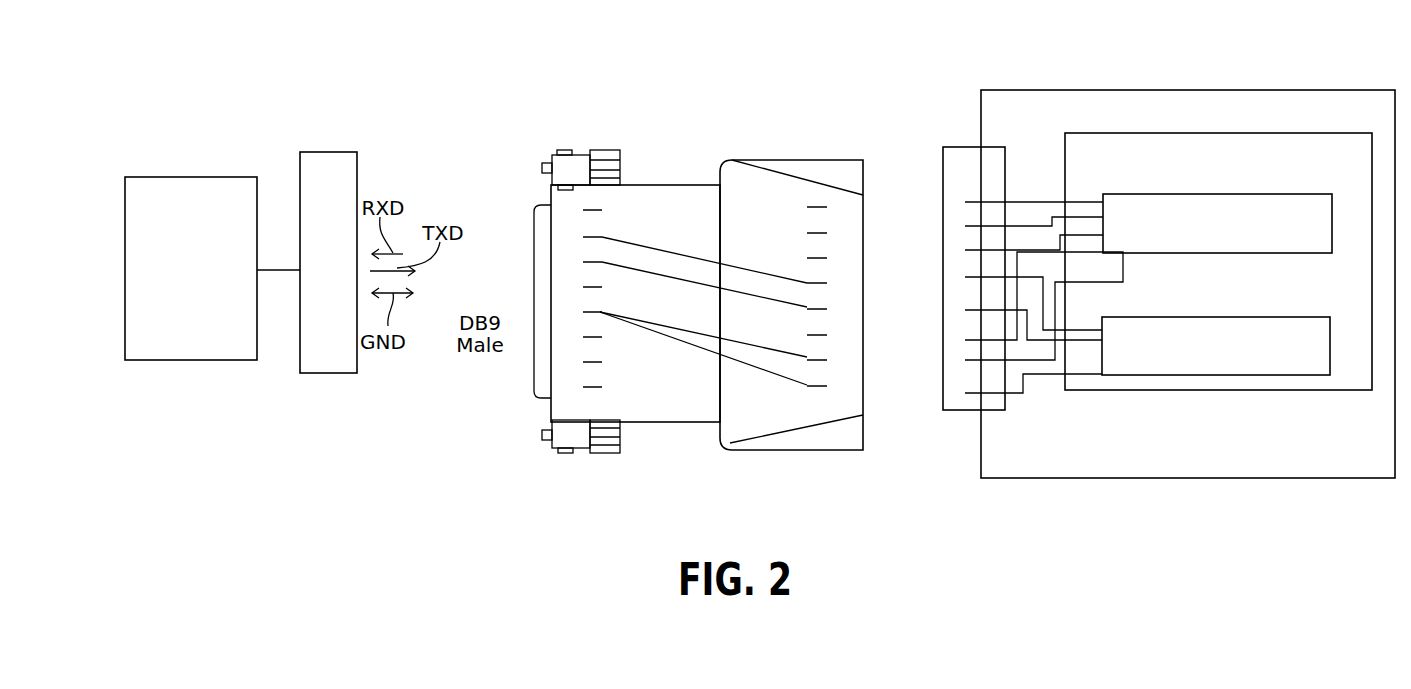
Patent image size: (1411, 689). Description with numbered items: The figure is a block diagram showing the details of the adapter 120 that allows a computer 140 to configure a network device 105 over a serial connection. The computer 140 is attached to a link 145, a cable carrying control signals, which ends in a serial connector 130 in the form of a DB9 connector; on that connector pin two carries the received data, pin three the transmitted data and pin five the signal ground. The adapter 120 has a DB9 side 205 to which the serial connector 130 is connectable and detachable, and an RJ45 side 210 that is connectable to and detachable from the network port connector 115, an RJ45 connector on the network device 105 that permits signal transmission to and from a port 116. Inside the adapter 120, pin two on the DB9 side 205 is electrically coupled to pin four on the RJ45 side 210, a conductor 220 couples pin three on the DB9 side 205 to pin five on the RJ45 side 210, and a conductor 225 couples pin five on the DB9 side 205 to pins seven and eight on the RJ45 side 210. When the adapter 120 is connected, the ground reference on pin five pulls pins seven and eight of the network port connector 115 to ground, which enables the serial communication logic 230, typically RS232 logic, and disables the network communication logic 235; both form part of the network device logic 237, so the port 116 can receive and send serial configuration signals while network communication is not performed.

The network device 105 is at (1267, 90).
The network port connector 115 is at (962, 412).
The port 116 is at (988, 412).
The adapter 120 is at (725, 440).
The serial connector 130 is at (323, 373).
The computer 140 is at (227, 177).
The link 145 is at (270, 270).
The DB9 side 205 is at (534, 233).
The RJ45 side 210 is at (865, 180).
The conductor 220 is at (653, 272).
The conductor 225 is at (683, 345).
The serial communication logic 230 is at (1242, 365).
The network communication logic 235 is at (1292, 253).
The network device logic 237 is at (1093, 162).